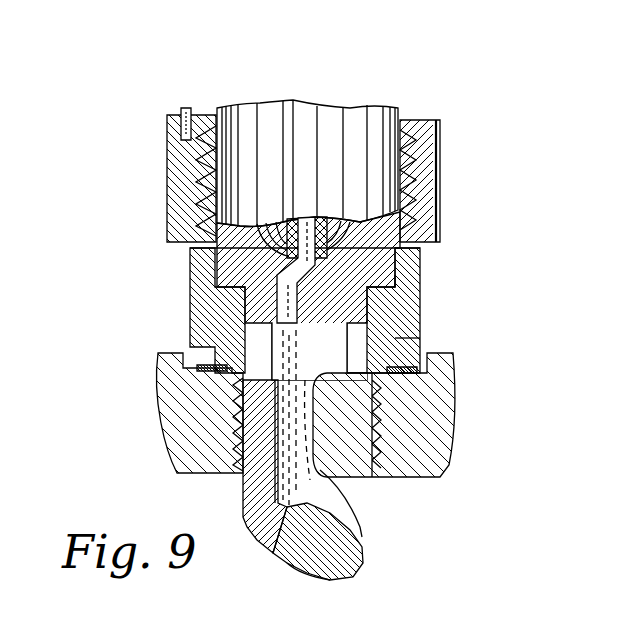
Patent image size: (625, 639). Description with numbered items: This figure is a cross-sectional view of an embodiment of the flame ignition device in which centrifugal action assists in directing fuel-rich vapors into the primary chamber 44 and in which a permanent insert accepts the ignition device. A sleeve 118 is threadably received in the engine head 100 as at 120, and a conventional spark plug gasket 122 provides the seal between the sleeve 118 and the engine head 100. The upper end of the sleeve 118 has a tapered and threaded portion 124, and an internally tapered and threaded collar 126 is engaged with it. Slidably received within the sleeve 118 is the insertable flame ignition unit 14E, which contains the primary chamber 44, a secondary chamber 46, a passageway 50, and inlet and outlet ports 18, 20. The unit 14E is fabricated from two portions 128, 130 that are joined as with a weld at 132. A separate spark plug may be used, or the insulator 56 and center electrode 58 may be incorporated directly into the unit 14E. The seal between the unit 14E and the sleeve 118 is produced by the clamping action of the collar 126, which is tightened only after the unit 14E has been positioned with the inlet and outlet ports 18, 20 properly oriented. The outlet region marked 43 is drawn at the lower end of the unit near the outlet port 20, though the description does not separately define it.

The insertable unit 14E is at (383, 106).
The collar 126 is at (167, 132).
The tapered and threaded portion 124 is at (205, 180).
The portion 130 is at (400, 226).
The center electrode 58 is at (290, 236).
The primary chamber 44 is at (287, 270).
The passageway 50 is at (250, 302).
The insulator 56 is at (345, 240).
The weld 132 is at (394, 283).
The sleeve 118 is at (420, 308).
The portion 128 is at (397, 338).
The spark plug gasket 122 is at (200, 362).
The secondary chamber 46 is at (292, 415).
The engine head 100 is at (447, 366).
The threaded connection 120 is at (380, 422).
The inlet port 18 is at (360, 540).
The outlet port 20 is at (275, 548).
The outlet 43 is at (307, 577).